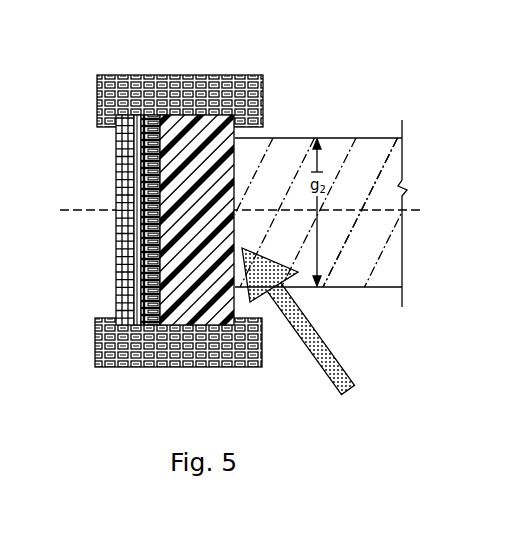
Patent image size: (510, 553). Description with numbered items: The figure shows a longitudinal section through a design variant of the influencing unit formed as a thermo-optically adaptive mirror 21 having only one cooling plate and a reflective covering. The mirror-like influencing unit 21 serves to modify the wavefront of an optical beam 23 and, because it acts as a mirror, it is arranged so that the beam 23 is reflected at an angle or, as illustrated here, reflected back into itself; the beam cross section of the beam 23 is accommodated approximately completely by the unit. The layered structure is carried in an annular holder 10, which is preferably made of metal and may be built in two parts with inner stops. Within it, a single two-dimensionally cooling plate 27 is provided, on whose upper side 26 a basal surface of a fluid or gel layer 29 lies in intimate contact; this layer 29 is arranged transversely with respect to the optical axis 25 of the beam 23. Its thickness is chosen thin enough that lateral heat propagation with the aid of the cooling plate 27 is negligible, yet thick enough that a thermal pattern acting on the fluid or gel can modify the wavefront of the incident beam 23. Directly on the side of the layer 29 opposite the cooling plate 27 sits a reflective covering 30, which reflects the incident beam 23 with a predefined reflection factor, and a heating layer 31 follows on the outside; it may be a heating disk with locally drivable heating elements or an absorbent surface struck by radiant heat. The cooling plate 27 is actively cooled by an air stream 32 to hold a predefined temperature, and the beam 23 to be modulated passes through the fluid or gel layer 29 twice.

The annular holder 10 is at (262, 96).
The thermo-optically adaptive mirror 21 is at (288, 59).
The optical beam 23 is at (371, 272).
The optical axis 25 is at (371, 210).
The upper side of the cooling plate 26 is at (118, 303).
The cooling plate 27 is at (232, 220).
The fluid or gel layer 29 is at (158, 118).
The reflective covering 30 is at (140, 119).
The heating layer 31 is at (123, 145).
The air stream 32 is at (330, 363).